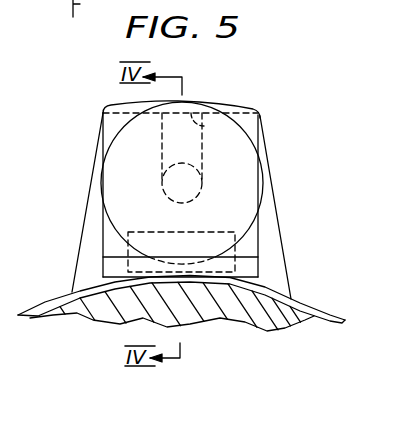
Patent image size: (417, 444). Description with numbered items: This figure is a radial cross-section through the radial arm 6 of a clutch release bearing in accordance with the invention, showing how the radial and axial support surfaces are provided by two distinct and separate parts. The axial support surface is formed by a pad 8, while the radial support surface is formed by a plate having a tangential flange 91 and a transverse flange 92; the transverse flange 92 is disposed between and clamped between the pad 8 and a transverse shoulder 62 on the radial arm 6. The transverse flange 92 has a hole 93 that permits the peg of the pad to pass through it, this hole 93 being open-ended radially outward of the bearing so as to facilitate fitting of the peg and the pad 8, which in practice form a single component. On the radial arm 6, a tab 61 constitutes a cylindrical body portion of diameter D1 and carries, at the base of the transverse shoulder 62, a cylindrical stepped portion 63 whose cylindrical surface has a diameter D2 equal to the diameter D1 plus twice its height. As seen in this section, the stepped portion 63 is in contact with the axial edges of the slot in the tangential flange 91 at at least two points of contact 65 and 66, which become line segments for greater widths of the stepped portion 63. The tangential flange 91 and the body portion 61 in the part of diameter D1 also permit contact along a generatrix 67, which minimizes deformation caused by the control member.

The radial arm 6 is at (95, 135).
The pad 8 is at (240, 170).
The tab 61 is at (312, 308).
The transverse shoulder 62 is at (238, 108).
The cylindrical stepped portion 63 is at (42, 300).
The point of contact 65 is at (128, 275).
The point of contact 66 is at (245, 268).
The generatrix 67 is at (167, 298).
The tangential flange 91 is at (243, 252).
The transverse flange 92 is at (250, 127).
The hole 93 is at (198, 106).
The diameter of body portion D1 is at (313, 320).
The diameter of stepped portion D2 is at (265, 297).